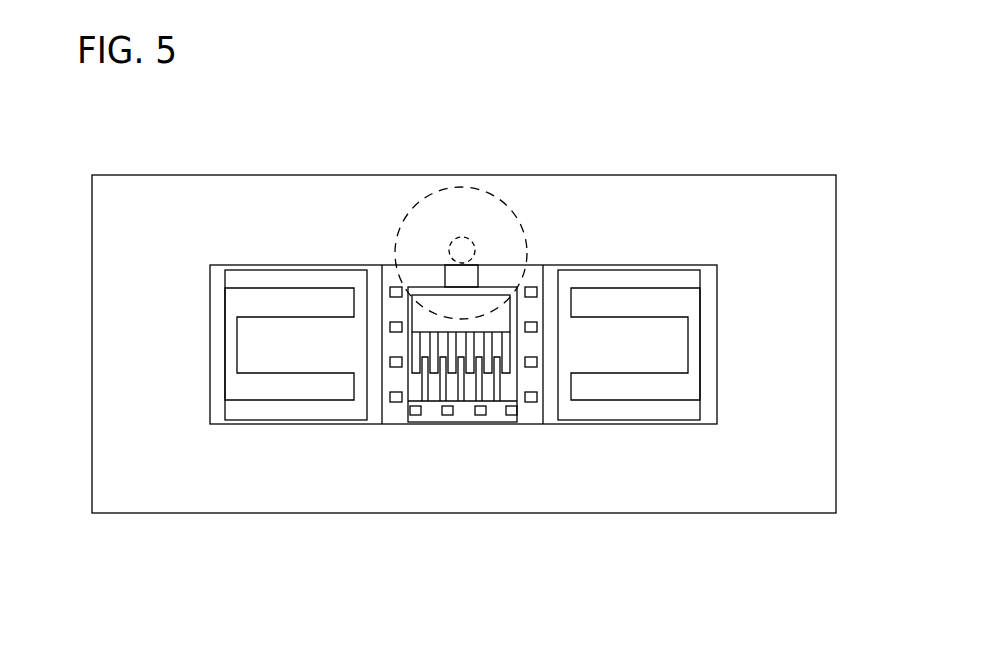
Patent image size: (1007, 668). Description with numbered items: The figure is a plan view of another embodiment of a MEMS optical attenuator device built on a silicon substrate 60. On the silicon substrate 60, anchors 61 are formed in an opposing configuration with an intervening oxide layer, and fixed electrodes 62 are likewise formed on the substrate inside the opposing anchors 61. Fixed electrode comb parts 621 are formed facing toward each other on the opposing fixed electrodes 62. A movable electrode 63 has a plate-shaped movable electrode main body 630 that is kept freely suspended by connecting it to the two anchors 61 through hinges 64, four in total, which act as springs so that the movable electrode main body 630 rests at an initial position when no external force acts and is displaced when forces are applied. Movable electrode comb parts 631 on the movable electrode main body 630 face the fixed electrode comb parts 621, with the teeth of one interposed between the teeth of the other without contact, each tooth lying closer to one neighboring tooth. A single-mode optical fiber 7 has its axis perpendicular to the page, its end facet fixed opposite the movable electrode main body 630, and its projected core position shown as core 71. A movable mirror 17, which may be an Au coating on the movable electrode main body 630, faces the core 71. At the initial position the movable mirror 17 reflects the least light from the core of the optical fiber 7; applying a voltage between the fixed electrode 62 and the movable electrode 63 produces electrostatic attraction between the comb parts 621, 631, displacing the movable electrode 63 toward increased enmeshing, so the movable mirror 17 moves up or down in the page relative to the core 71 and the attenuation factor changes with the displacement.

The silicon substrate 60 is at (770, 514).
The hinges 64 is at (288, 265).
The anchors 61 is at (647, 325).
The movable electrode 63 is at (396, 278).
The fixed electrodes 62 is at (506, 318).
The movable mirror 17 is at (446, 265).
The single-mode optical fiber 7 is at (477, 190).
The projected core position of optical fiber 71 is at (470, 246).
The fixed electrode comb parts 621 is at (414, 360).
The movable electrode comb parts 631 is at (503, 372).
The movable electrode main body 630 is at (457, 415).